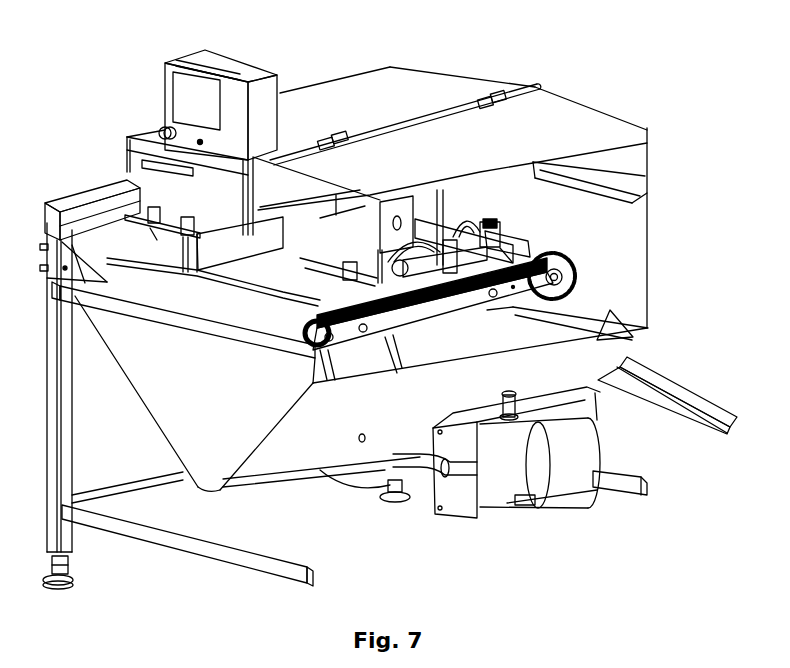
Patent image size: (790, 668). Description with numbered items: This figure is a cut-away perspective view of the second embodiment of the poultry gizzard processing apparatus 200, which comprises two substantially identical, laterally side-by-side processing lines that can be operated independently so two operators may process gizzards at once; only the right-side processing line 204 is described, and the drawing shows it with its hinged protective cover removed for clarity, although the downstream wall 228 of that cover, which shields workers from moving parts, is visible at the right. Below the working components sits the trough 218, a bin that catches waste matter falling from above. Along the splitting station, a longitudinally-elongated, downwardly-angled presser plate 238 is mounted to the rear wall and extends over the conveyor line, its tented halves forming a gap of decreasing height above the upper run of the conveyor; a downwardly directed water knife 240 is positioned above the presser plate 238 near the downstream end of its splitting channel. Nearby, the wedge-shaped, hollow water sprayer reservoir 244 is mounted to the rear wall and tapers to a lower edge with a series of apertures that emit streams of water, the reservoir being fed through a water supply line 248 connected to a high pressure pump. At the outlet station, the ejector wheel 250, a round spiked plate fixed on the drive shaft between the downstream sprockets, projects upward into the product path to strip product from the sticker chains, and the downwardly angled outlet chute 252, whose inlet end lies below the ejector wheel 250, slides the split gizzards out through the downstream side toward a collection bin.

The poultry gizzard processing apparatus 200 is at (712, 75).
The processing line 204 is at (286, 317).
The trough 218 is at (212, 445).
The downstream wall 228 is at (627, 157).
The presser plate 238 is at (430, 283).
The water knife 240 is at (452, 262).
The water sprayer reservoir 244 is at (518, 245).
The water supply line 248 is at (490, 222).
The ejector wheel 250 is at (562, 257).
The outlet chute 252 is at (673, 410).